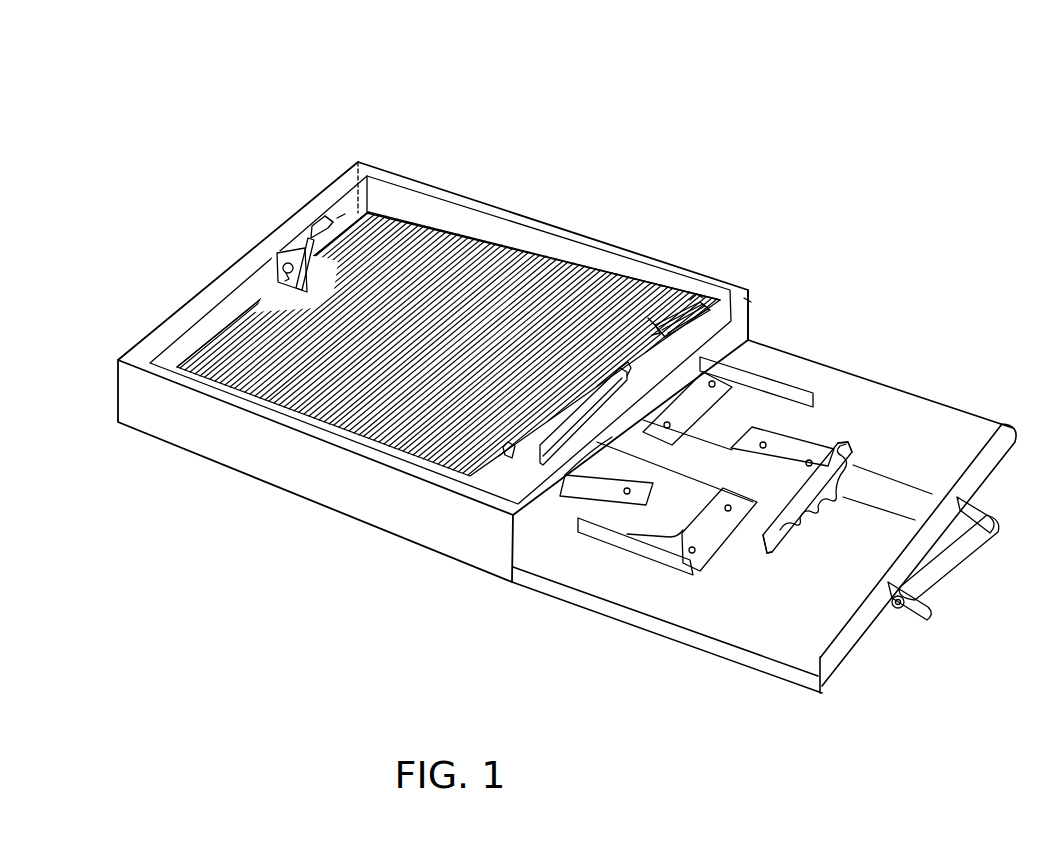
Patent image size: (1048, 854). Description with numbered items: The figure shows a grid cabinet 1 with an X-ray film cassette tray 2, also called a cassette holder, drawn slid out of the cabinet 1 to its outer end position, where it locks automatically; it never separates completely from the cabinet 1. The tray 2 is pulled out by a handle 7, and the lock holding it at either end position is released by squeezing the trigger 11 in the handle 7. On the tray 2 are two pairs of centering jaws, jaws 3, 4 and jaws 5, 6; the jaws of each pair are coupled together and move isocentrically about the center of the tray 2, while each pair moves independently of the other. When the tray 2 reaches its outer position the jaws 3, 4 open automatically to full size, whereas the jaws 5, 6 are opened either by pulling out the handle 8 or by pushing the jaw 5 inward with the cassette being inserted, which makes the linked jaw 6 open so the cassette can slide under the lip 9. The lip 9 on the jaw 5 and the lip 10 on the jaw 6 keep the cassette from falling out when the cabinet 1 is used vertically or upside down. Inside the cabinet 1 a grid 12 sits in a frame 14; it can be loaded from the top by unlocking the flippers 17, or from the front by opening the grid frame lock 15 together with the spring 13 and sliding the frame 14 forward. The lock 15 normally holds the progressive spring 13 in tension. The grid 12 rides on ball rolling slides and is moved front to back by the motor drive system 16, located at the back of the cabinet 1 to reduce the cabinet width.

The grid cabinet 1 is at (252, 442).
The X-ray film cassette tray 2 is at (602, 575).
The jaw 3 is at (680, 565).
The jaw 4 is at (808, 394).
The jaw 5 is at (570, 483).
The jaw 6 is at (847, 463).
The handle 7 is at (955, 563).
The handle 8 is at (840, 457).
The lip 9 is at (845, 443).
The lip 10 is at (620, 373).
The trigger 11 is at (912, 613).
The grid 12 is at (422, 205).
The spring 13 is at (690, 320).
The frame 14 is at (490, 217).
The grid frame lock 15 is at (750, 295).
The motor drive system 16 is at (287, 257).
The flippers 17 is at (502, 457).